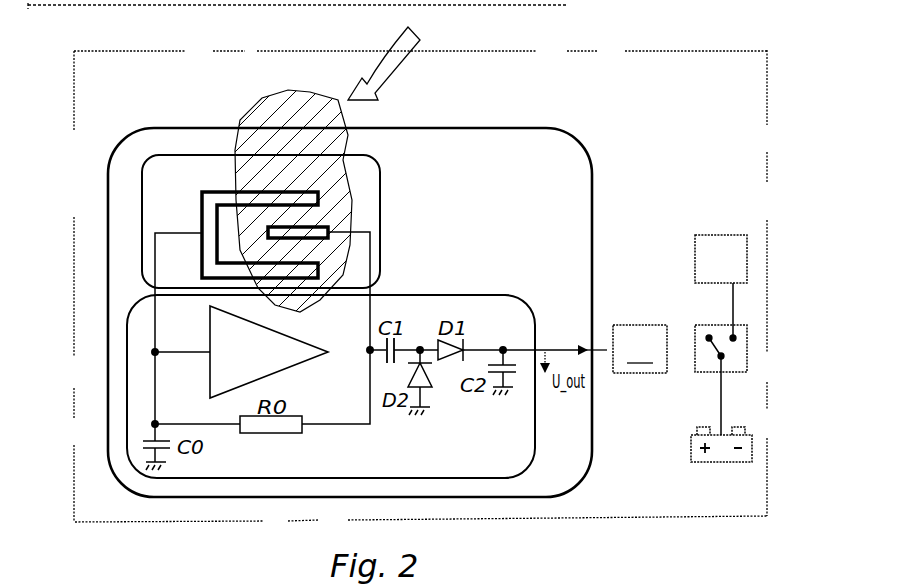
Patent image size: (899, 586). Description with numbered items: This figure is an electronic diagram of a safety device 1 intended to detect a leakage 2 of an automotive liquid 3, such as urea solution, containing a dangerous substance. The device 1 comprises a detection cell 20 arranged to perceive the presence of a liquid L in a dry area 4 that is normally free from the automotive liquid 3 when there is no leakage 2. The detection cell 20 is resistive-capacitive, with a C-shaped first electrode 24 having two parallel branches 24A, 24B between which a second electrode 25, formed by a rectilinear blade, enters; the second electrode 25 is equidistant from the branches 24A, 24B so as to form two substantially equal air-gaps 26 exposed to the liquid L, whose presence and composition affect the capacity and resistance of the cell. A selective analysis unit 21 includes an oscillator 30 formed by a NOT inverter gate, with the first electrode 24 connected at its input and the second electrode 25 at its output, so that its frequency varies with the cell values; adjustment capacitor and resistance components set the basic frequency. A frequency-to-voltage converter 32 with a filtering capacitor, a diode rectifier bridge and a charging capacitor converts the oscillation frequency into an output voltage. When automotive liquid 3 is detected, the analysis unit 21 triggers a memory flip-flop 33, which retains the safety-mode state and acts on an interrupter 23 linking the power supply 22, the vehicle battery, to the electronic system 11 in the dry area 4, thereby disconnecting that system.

The safety device 1 is at (596, 145).
The leakage 2 is at (388, 73).
The automotive liquid 3 is at (281, 103).
The dry area 4 is at (513, 52).
The electronic system 11 is at (695, 262).
The detection cell 20 is at (141, 192).
The selective analysis unit 21 is at (126, 370).
The power supply 22 is at (718, 464).
The interrupter 23 is at (712, 374).
The first electrode 24 is at (239, 183).
The branch of first electrode 24A is at (237, 192).
The branch of first electrode 24B is at (243, 240).
The second electrode 25 is at (325, 222).
The air-gap 26 is at (300, 213).
The oscillator 30 is at (303, 343).
The frequency-to-voltage converter 32 is at (490, 316).
The memory flip-flop 33 is at (640, 349).
The liquid L is at (307, 92).